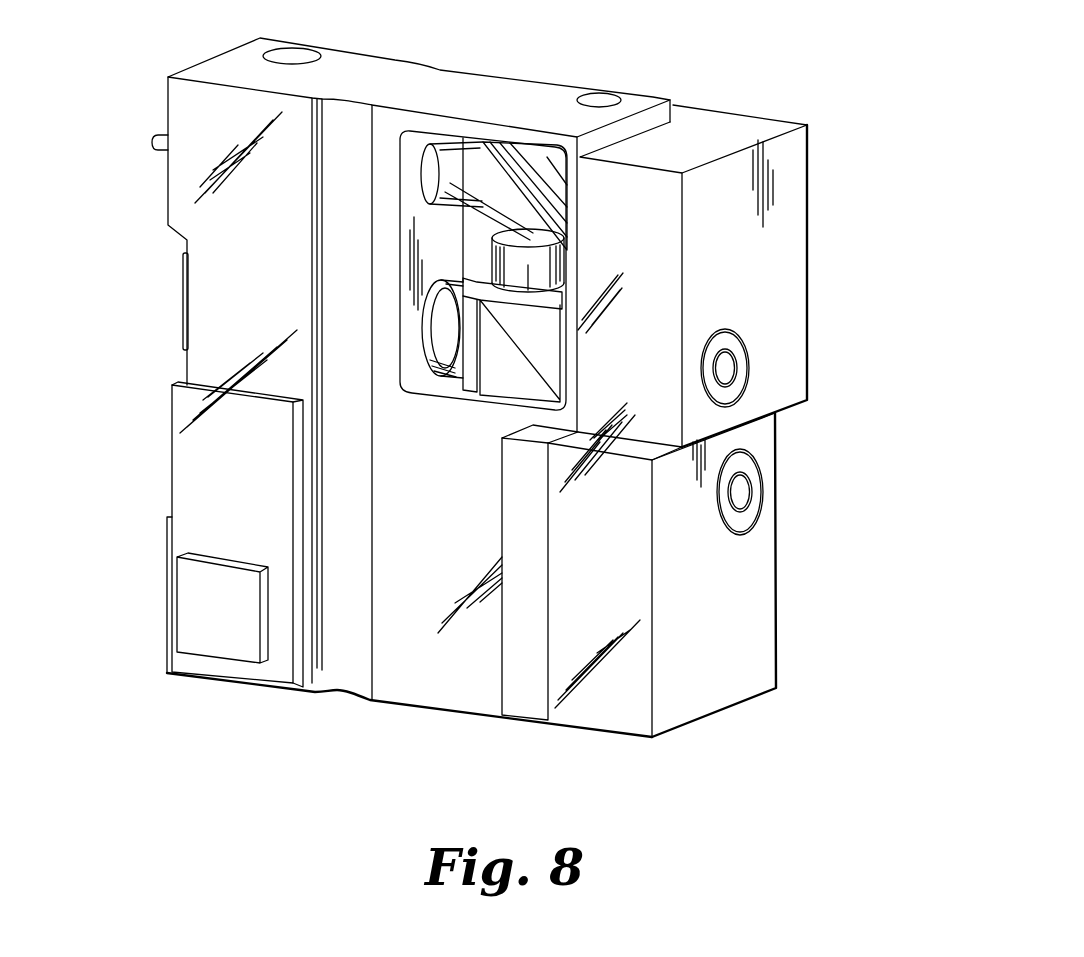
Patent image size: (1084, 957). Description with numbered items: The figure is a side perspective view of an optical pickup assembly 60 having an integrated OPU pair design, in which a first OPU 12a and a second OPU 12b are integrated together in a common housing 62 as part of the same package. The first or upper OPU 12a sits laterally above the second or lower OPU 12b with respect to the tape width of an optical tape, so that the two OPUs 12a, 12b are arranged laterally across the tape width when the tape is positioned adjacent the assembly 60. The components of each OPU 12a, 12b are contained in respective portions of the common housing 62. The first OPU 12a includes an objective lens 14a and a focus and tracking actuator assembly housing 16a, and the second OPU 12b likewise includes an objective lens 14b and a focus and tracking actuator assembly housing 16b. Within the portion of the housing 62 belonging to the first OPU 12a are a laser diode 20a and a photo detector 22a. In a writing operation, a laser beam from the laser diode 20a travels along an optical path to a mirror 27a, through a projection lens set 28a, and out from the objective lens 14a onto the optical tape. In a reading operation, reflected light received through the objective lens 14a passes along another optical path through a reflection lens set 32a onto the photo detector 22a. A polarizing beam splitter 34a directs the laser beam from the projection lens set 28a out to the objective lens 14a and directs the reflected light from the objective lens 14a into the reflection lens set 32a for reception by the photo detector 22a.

The optical pickup assembly 60 is at (418, 387).
The first OPU 12a is at (747, 276).
The second OPU 12b is at (796, 575).
The objective lens 14a is at (725, 368).
The objective lens 14b is at (742, 492).
The focus and tracking actuator assembly housing 16a is at (768, 290).
The focus and tracking actuator assembly housing 16b is at (722, 597).
The laser diode 20a is at (158, 141).
The photo detector 22a is at (182, 302).
The mirror 27a is at (547, 165).
The projection lens set 28a is at (535, 237).
The reflection lens set 32a is at (443, 327).
The polarizing beam splitter 34a is at (510, 368).
The common housing 62 is at (443, 662).